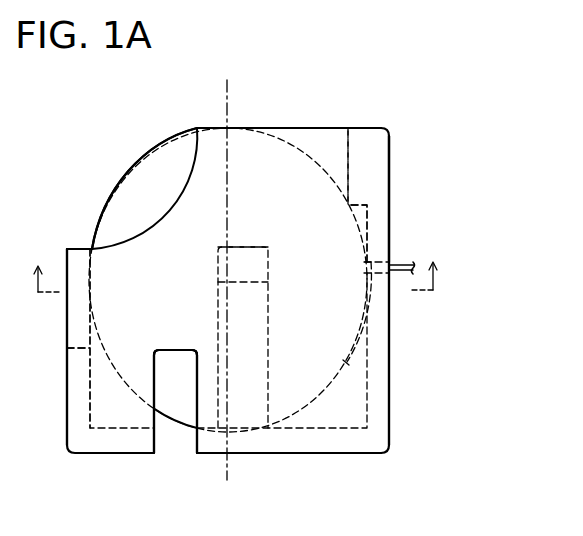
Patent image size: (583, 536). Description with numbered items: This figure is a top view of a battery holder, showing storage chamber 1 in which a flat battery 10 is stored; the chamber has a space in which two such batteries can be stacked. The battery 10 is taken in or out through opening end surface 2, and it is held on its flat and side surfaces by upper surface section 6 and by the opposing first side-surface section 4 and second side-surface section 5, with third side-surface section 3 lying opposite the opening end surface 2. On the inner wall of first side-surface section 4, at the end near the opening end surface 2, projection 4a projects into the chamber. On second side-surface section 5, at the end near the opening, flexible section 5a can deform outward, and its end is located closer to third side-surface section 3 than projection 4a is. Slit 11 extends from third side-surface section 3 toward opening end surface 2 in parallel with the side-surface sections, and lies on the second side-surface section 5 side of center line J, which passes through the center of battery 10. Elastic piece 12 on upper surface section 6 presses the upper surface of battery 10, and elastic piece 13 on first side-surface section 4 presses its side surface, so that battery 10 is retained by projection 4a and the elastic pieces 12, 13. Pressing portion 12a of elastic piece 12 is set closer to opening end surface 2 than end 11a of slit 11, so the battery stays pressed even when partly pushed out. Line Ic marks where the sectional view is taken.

The storage chamber 1 is at (412, 103).
The opening end surface 2 is at (298, 127).
The third side-surface section 3 is at (315, 455).
The first side-surface section 4 is at (392, 383).
The projection 4a is at (368, 163).
The second side-surface section 5 is at (67, 392).
The flexible section 5a is at (65, 267).
The upper surface section 6 is at (330, 153).
The battery 10 is at (147, 182).
The slit 11 is at (157, 382).
The end of slit 11a is at (175, 348).
The elastic piece 12 is at (245, 397).
The pressing portion 12a is at (252, 278).
The elastic piece 13 is at (347, 358).
The center line J is at (230, 106).
The section line Ic is at (237, 289).